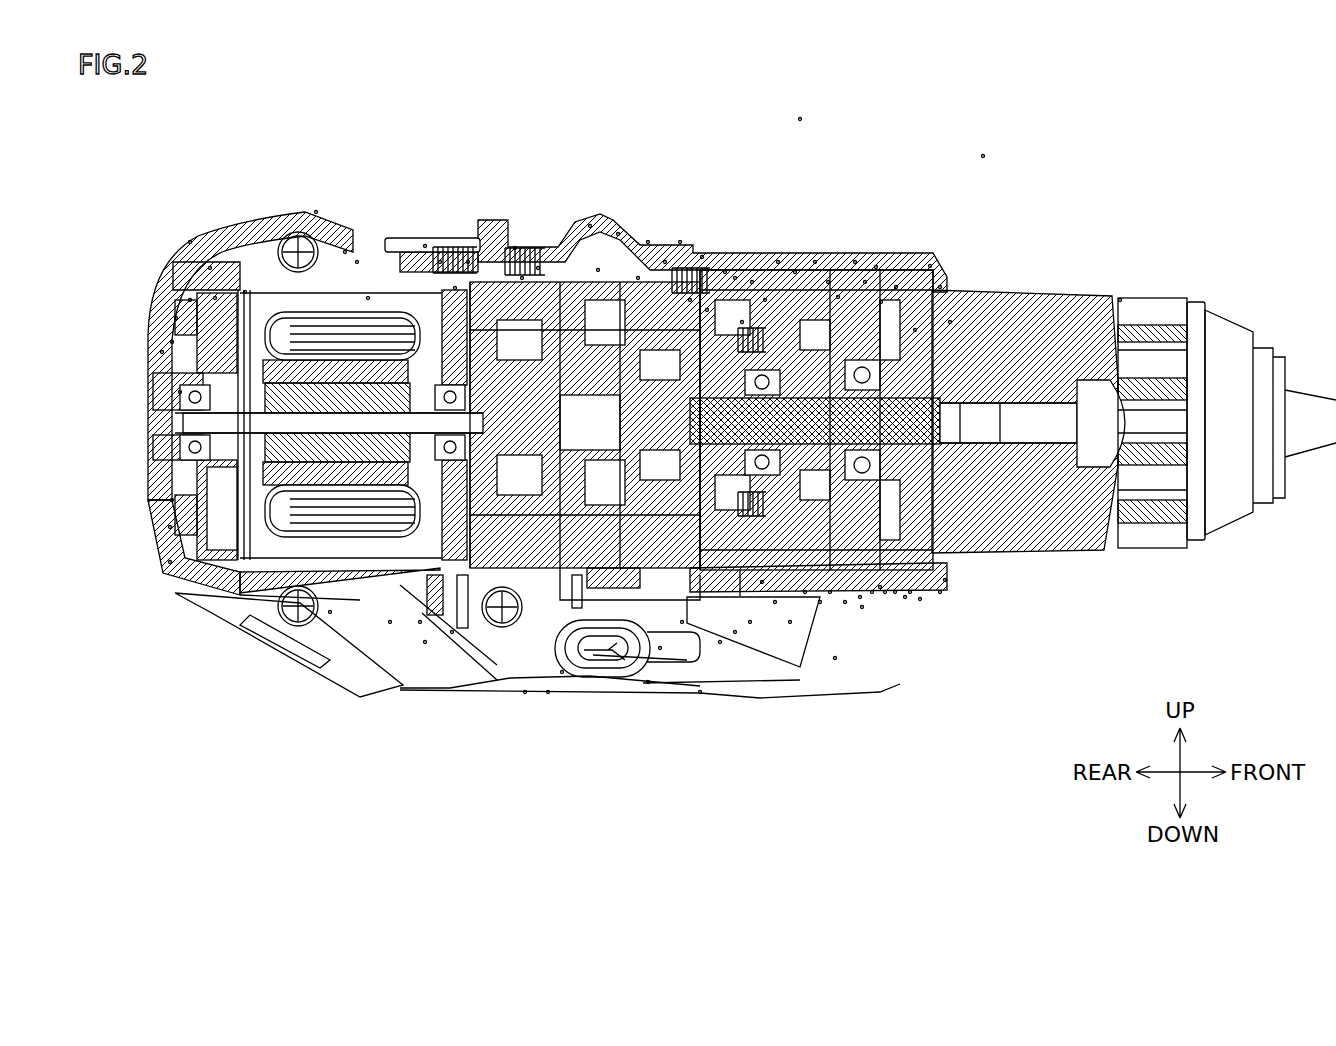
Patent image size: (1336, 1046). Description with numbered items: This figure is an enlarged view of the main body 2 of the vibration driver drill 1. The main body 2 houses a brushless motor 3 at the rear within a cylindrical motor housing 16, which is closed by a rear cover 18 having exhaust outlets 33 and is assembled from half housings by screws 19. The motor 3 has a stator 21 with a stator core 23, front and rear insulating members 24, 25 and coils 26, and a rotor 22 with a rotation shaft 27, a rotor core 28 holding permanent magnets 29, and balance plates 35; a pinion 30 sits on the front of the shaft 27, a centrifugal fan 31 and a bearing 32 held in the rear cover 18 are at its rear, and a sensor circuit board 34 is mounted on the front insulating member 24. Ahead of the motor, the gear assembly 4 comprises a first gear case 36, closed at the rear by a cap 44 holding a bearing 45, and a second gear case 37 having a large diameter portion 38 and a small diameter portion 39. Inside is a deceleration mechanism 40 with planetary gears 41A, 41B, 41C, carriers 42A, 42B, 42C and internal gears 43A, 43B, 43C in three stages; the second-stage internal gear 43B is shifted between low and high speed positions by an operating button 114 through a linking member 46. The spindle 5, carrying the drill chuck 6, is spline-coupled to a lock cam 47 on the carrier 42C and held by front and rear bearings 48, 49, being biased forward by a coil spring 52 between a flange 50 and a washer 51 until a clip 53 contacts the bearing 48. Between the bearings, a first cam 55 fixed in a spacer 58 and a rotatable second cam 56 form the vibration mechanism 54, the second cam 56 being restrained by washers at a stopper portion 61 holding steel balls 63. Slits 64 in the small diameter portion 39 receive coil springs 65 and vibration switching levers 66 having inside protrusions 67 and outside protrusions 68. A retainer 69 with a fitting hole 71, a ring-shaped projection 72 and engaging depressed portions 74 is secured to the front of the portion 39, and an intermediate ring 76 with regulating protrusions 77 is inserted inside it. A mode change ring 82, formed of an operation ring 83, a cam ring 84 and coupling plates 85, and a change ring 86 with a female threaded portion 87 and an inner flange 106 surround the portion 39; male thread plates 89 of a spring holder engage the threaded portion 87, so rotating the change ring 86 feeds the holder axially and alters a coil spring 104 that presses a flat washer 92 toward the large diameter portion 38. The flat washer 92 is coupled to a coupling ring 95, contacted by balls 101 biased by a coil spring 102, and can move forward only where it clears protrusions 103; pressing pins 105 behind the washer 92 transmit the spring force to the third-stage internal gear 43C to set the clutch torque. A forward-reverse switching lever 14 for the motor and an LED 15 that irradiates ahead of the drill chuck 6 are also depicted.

The vibration driver drill 1 is at (997, 152).
The main body 2 is at (655, 231).
The brushless motor 3 is at (345, 252).
The gear assembly 4 is at (624, 222).
The spindle 5 is at (855, 262).
The drill chuck 6 is at (1120, 300).
The forward-reverse switching lever 14 is at (607, 660).
The LED 15 is at (835, 658).
The motor housing 16 is at (321, 201).
The rear cover 18 is at (190, 242).
The screws 19 is at (290, 240).
The stator 21 is at (368, 298).
The rotor 22 is at (190, 300).
The stator core 23 is at (357, 262).
The front insulating member 24 is at (425, 246).
The rear insulating member 25 is at (210, 268).
The coils 26 is at (245, 292).
The rotation shaft 27 is at (200, 423).
The rotor core 28 is at (215, 298).
The permanent magnets 29 is at (172, 342).
The pinion 30 is at (455, 288).
The centrifugal fan 31 is at (162, 352).
The bearing 32 is at (180, 392).
The exhaust outlets 33 is at (176, 318).
The sensor circuit board 34 is at (390, 622).
The balance plates 35 is at (170, 562).
The first gear case 36 is at (590, 226).
The second gear case 37 is at (665, 262).
The large diameter portion 38 is at (638, 278).
The small diameter portion 39 is at (735, 278).
The deceleration mechanism 40 is at (522, 278).
The planetary gear 41A is at (468, 262).
The planetary gear 41B is at (538, 268).
The planetary gear 41C is at (598, 270).
The carrier 42A is at (525, 692).
The carrier 42B is at (562, 672).
The carrier 42C is at (700, 692).
The internal gear 43A is at (452, 632).
The internal gear 43B is at (548, 692).
The internal gear 43C is at (648, 682).
The cap 44 is at (420, 622).
The bearing 45 is at (425, 642).
The linking member 46 is at (515, 248).
The lock cam 47 is at (682, 622).
The front bearing 48 is at (880, 587).
The rear bearing 49 is at (775, 602).
The flange 50 is at (950, 322).
The washer 51 is at (910, 592).
The coil spring 52 is at (945, 580).
The clip 53 is at (860, 597).
The vibration mechanism 54 is at (762, 132).
The first cam 55 is at (815, 262).
The second cam 56 is at (778, 262).
The spacer 58 is at (820, 602).
The stopper portion 61 is at (790, 622).
The steel balls 63 is at (765, 300).
The slits 64 is at (865, 282).
The coil spring 65 is at (742, 322).
The vibration switching lever 66 is at (828, 282).
The inside protrusion 67 is at (752, 282).
The outside protrusion 68 is at (838, 297).
The retainer 69 is at (930, 266).
The fitting hole 71 is at (920, 599).
The projection 72 is at (896, 287).
The engaging depressed portions 74 is at (915, 330).
The intermediate ring 76 is at (940, 287).
The regulating protrusions 77 is at (881, 302).
The mode change ring 82 is at (750, 622).
The operation ring 83 is at (735, 632).
The cam ring 84 is at (885, 592).
The coupling plates 85 is at (795, 272).
The change ring 86 is at (940, 592).
The female threaded portion 87 is at (845, 602).
The male thread plates 89 is at (872, 592).
The flat washer 92 is at (720, 642).
The coupling ring 95 is at (725, 272).
The balls 101 is at (680, 242).
The coil spring 102 is at (702, 257).
The protrusions 103 is at (690, 300).
The coil spring 104 is at (707, 310).
The pressing pins 105 is at (660, 648).
The inner flange 106 is at (876, 267).
The operating button 114 is at (440, 262).